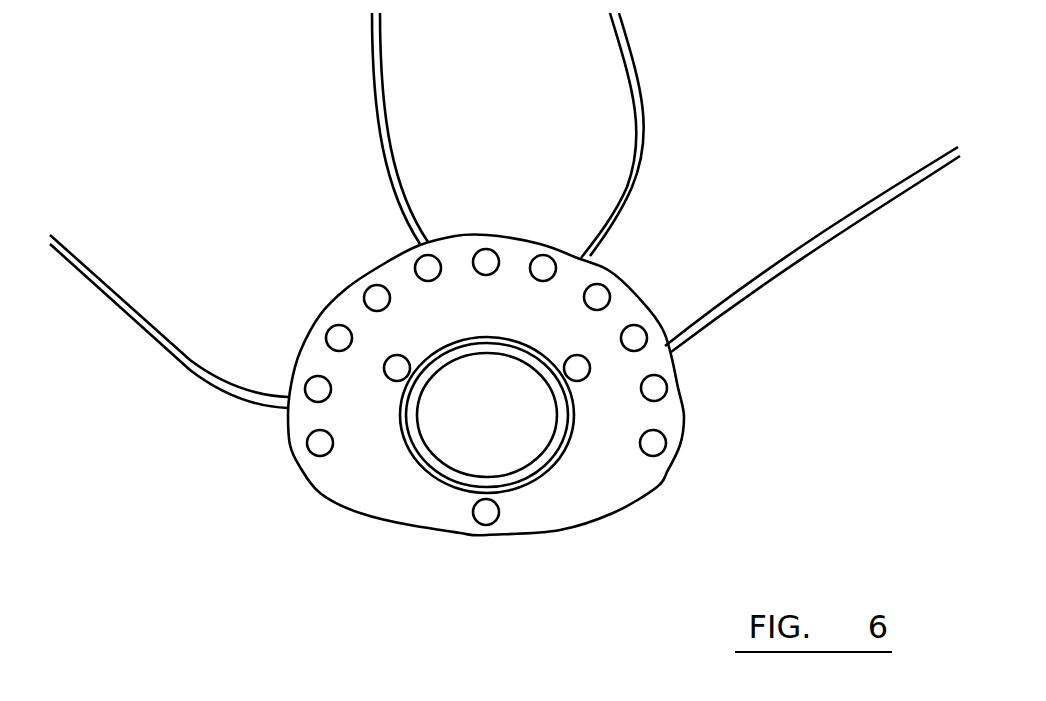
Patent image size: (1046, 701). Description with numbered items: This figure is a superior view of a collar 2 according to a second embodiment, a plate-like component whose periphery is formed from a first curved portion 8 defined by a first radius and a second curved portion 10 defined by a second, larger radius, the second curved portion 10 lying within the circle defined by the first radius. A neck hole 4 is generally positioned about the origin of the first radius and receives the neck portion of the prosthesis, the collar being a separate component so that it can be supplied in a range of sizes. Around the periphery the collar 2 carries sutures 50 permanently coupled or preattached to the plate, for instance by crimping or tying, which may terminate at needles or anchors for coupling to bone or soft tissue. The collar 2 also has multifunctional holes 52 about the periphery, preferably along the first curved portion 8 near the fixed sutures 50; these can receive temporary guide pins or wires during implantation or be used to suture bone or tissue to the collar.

The collar 2 is at (620, 522).
The neck hole 4 is at (455, 432).
The first curved portion 8 is at (635, 298).
The second curved portion 10 is at (408, 527).
The sutures 50 is at (373, 66).
The multifunctional holes 52 is at (427, 266).